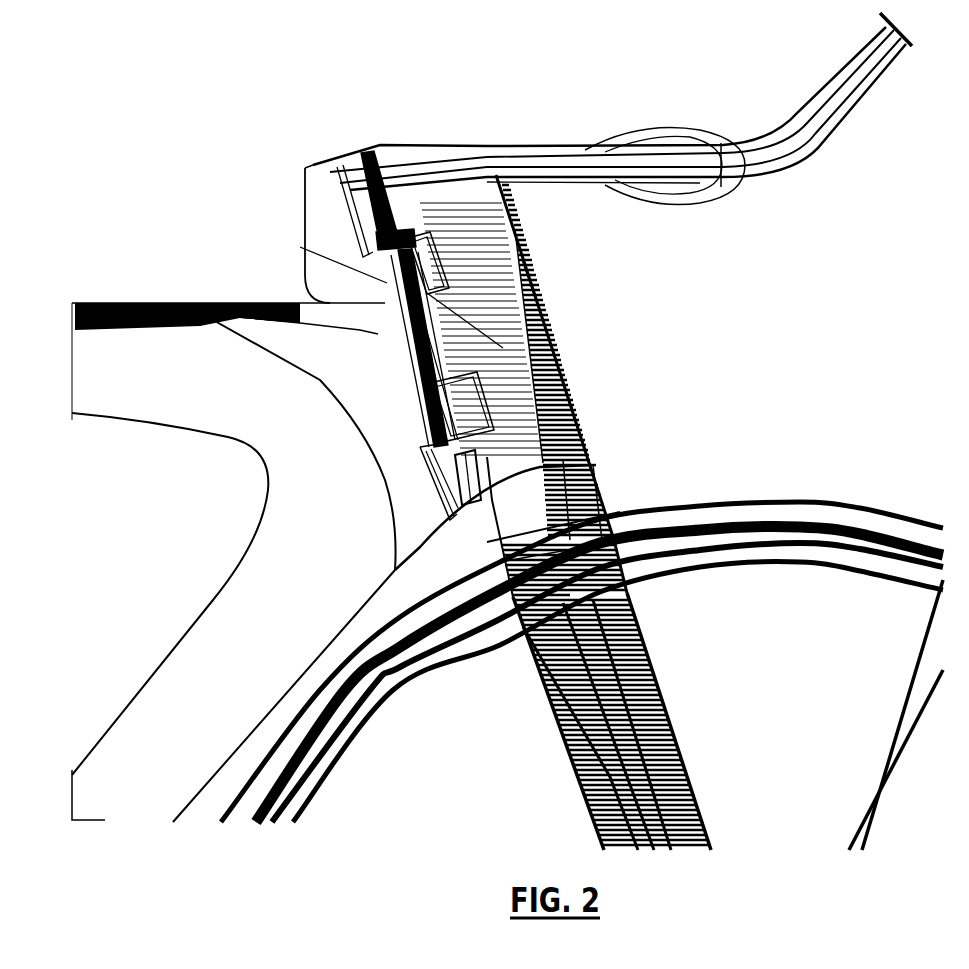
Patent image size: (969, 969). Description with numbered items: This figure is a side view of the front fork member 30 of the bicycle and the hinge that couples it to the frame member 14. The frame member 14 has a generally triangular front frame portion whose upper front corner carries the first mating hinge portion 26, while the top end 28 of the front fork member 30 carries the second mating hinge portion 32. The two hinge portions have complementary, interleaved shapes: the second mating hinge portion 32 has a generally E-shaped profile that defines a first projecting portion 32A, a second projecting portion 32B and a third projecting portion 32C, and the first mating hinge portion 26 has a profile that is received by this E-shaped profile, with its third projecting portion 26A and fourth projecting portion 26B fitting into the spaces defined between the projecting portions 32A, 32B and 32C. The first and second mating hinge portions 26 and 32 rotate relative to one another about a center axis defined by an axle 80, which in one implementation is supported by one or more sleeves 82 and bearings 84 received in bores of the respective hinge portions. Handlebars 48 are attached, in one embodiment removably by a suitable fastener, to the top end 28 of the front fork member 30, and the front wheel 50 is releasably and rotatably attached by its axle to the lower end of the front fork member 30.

The frame member 14 is at (100, 303).
The first mating hinge portion 26 is at (320, 210).
The third projecting portion 26A is at (385, 286).
The fourth projecting portion 26B is at (422, 437).
The top end 28 is at (577, 251).
The front fork member 30 is at (670, 723).
The second mating hinge portion 32 is at (528, 343).
The first projecting portion 32A is at (415, 215).
The second projecting portion 32B is at (460, 352).
The third projecting portion 32C is at (490, 470).
The handlebars 48 is at (594, 107).
The front wheel 50 is at (742, 500).
The axle 80 is at (398, 338).
The sleeve 82 is at (430, 416).
The bearing 84 is at (376, 241).